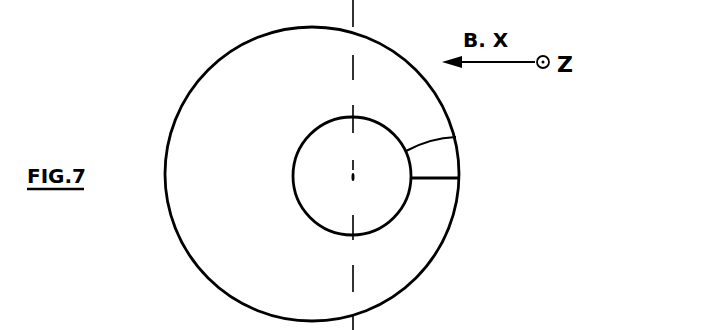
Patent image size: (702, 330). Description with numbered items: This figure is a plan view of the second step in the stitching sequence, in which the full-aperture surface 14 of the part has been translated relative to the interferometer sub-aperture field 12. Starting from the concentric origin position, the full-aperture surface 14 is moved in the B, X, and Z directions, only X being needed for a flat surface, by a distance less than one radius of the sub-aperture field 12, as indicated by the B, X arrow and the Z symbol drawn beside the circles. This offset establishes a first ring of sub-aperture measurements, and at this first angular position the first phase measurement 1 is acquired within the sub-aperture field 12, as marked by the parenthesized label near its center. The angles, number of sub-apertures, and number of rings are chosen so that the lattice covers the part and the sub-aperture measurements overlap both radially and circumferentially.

The first phase measurement 1 is at (372, 191).
The sub-aperture field 12 is at (456, 137).
The full-aperture surface 14 is at (231, 52).